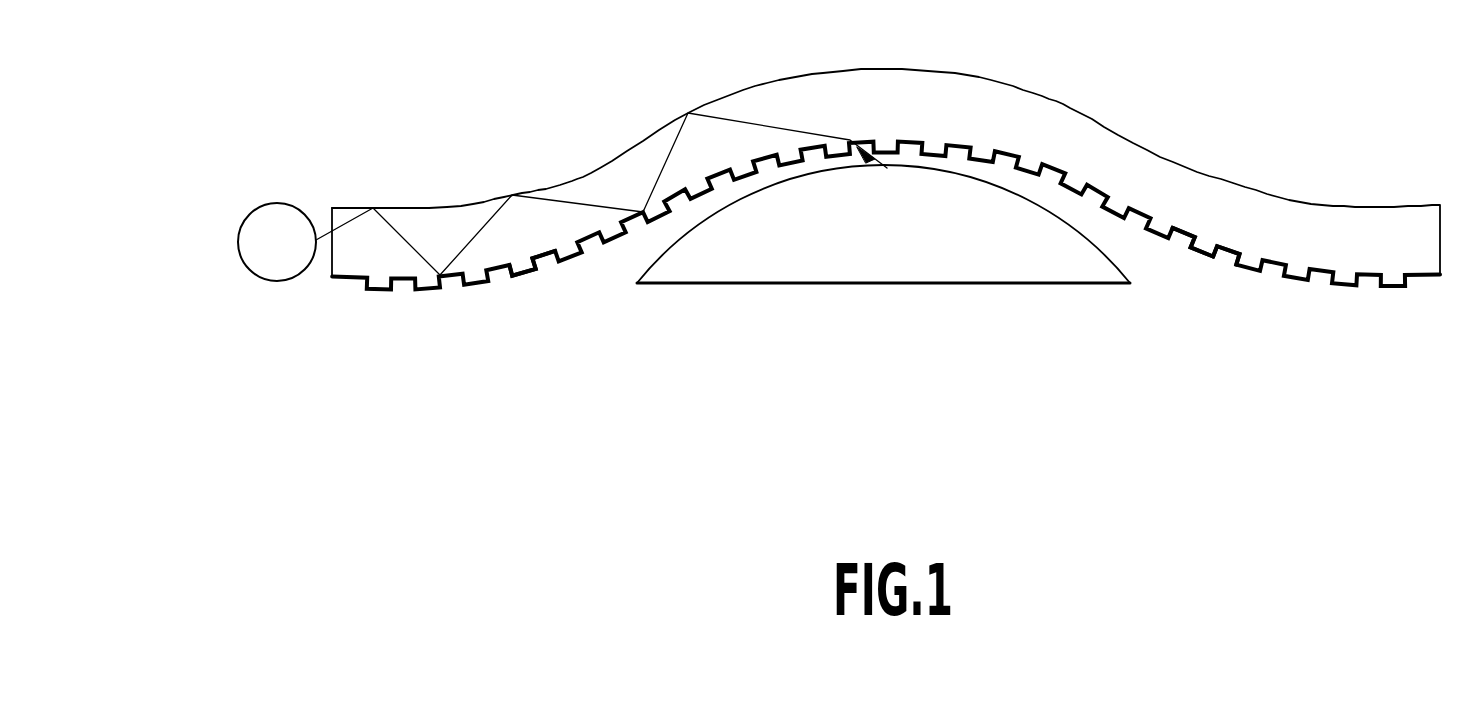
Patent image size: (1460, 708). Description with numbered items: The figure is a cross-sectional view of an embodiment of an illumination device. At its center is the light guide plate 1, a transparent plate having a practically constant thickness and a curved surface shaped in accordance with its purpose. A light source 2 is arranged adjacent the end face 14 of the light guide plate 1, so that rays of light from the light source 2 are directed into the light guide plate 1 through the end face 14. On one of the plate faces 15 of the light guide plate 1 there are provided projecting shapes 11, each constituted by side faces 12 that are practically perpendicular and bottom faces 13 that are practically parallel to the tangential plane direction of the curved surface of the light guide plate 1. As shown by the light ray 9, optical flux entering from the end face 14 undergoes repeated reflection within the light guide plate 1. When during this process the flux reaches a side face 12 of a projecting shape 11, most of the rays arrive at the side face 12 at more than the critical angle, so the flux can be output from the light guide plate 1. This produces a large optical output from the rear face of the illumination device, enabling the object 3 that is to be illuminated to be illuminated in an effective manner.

The light guide plate 1 is at (1117, 150).
The light source 2 is at (280, 250).
The object 3 is at (892, 263).
The light ray 9 is at (593, 207).
The projecting shape 11 is at (1153, 233).
The side face 12 is at (1213, 257).
The bottom face 13 is at (1193, 260).
The end face 14 is at (330, 209).
The plate face 15 is at (537, 260).